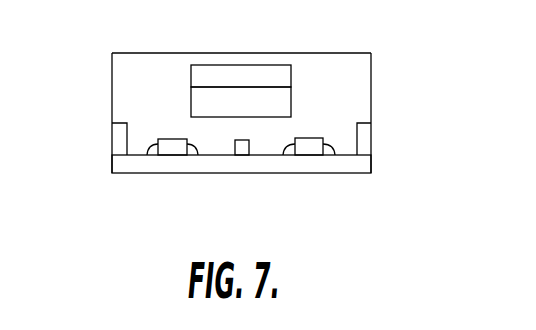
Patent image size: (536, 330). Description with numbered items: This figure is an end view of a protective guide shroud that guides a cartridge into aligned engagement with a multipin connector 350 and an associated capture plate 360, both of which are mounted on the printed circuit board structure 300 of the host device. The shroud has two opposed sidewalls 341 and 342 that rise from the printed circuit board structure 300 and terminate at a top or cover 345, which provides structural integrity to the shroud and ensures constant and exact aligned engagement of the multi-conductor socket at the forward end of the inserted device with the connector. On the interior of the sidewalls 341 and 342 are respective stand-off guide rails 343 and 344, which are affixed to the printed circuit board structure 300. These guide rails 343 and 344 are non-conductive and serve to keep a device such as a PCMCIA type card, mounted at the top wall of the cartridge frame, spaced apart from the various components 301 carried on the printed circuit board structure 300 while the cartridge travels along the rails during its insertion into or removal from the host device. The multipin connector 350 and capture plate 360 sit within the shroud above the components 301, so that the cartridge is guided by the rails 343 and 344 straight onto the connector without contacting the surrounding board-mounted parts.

The printed circuit board structure 300 is at (332, 167).
The components 301 is at (305, 148).
The sidewall 341 is at (112, 100).
The sidewall 342 is at (372, 92).
The stand-off guide rail 343 is at (117, 140).
The stand-off guide rail 344 is at (367, 138).
The top or cover 345 is at (232, 53).
The multipin connector 350 is at (290, 101).
The capture plate 360 is at (292, 82).